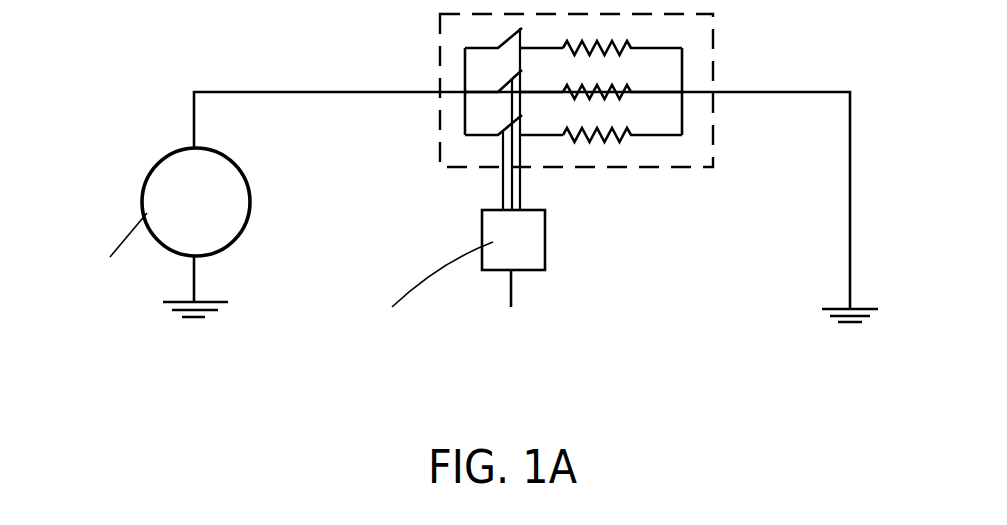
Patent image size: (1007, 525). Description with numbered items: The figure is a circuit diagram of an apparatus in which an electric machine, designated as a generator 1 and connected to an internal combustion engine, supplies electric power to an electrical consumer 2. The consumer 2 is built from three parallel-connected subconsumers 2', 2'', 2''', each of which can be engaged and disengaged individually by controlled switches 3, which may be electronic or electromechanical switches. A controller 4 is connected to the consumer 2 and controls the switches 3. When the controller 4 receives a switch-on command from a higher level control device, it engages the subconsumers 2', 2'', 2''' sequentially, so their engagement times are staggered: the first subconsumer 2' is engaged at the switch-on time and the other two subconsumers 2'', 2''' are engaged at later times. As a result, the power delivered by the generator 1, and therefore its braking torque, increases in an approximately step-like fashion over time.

The generator 1 is at (218, 245).
The electrical consumer 2 is at (576, 121).
The first subconsumer 2' is at (654, 138).
The second subconsumer 2'' is at (654, 84).
The third subconsumer 2''' is at (658, 35).
The controlled switches 3 is at (520, 28).
The controller 4 is at (518, 262).